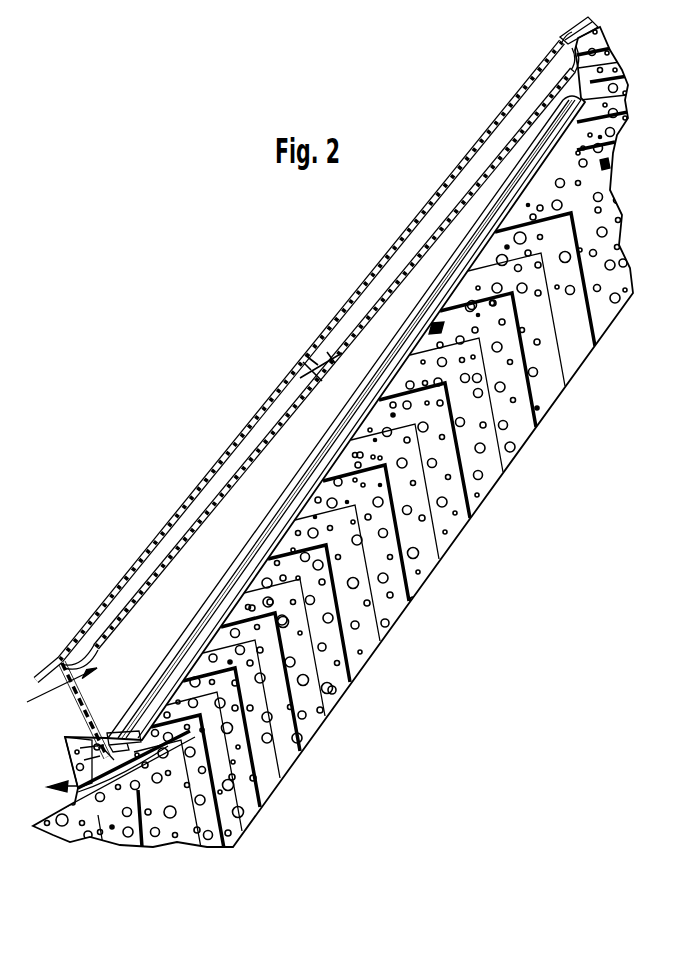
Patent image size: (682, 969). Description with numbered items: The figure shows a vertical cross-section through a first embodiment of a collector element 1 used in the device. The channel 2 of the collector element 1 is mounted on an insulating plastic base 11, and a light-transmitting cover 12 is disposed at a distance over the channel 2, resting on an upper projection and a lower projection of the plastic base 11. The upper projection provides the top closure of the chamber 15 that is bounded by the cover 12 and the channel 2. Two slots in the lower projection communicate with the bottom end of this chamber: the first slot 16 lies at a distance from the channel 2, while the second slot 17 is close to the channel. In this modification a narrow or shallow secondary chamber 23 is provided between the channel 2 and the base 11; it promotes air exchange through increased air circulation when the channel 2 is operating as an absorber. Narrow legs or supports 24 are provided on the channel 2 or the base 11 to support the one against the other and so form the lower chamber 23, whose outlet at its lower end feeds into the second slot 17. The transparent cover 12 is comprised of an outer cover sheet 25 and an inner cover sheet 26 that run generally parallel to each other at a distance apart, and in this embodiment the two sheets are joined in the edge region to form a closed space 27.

The collector element 1 is at (345, 384).
The channel 2 is at (262, 535).
The insulating plastic base 11 is at (478, 558).
The light-transmitting cover 12 is at (317, 348).
The chamber 15 is at (467, 218).
The first slot 16 is at (80, 663).
The second slot 17 is at (120, 768).
The secondary chamber 23 is at (295, 493).
The legs or supports 24 is at (606, 163).
The outer cover sheet 25 is at (376, 268).
The inner cover sheet 26 is at (298, 396).
The closed space 27 is at (262, 432).